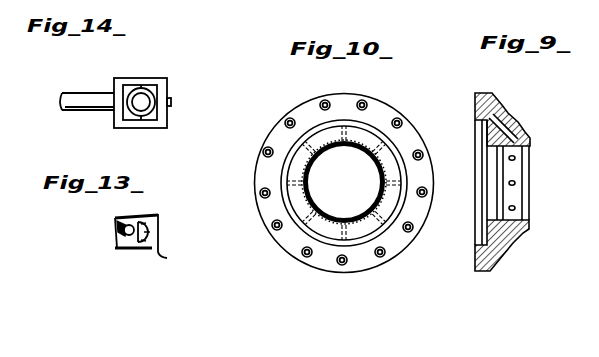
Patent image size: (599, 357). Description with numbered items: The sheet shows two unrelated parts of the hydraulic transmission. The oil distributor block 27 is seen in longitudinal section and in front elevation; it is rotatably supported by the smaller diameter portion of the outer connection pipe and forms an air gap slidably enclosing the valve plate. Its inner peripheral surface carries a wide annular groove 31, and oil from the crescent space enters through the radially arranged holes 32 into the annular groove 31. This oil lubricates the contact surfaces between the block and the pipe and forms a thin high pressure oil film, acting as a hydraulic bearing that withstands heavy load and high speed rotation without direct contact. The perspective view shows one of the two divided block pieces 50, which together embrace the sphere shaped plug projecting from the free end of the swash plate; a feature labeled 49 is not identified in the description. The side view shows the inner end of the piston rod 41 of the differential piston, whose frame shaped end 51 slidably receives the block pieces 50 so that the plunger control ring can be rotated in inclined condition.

In FIG. 10, the oil distributor block 27 is at (318, 262).
In FIG. 9, the oil distributor block 27 is at (505, 106).
In FIG. 10, the annular groove 31 is at (336, 146).
In FIG. 9, the annular groove 31 is at (523, 197).
In FIG. 10, the radially arranged holes 32 is at (283, 181).
In FIG. 9, the radially arranged holes 32 is at (516, 183).
In FIG. 14, the piston rod 41 is at (80, 108).
In FIG. 13, the knob 49 is at (118, 235).
In FIG. 14, the divided block pieces 50 is at (152, 88).
In FIG. 13, the divided block pieces 50 is at (166, 243).
In FIG. 14, the frame shaped end 51 is at (167, 80).